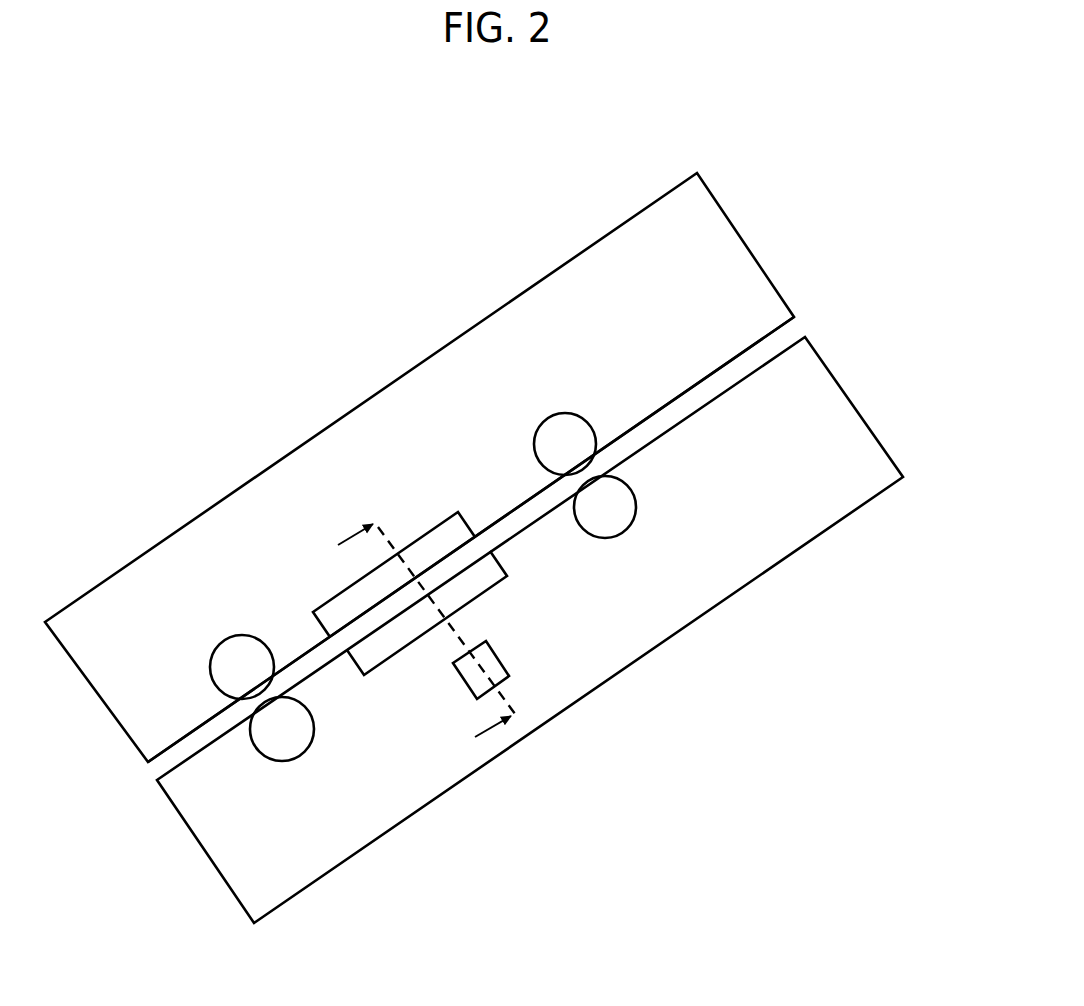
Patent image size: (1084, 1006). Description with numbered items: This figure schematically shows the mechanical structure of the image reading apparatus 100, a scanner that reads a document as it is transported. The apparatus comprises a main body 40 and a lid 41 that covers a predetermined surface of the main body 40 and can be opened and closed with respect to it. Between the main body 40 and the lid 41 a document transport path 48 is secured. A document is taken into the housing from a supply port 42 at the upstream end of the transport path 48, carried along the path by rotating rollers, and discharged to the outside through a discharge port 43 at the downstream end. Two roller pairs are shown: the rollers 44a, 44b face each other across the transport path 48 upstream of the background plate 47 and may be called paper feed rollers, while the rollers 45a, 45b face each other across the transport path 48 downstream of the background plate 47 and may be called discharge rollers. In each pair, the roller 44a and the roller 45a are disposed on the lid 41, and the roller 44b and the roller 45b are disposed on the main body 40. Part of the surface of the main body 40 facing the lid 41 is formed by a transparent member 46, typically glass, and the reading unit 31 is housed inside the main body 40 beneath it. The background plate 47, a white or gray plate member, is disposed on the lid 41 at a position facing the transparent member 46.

The image reading apparatus 100 is at (375, 343).
The main body 40 is at (878, 448).
The lid 41 is at (748, 245).
The supply port 42 is at (817, 327).
The discharge port 43 is at (138, 768).
The roller 44a is at (552, 414).
The roller 44b is at (637, 510).
The roller 45a is at (242, 634).
The roller 45b is at (281, 762).
The transparent member 46 is at (507, 576).
The background plate 47 is at (430, 530).
The transport path 48 is at (708, 385).
The reading unit 31 is at (493, 643).